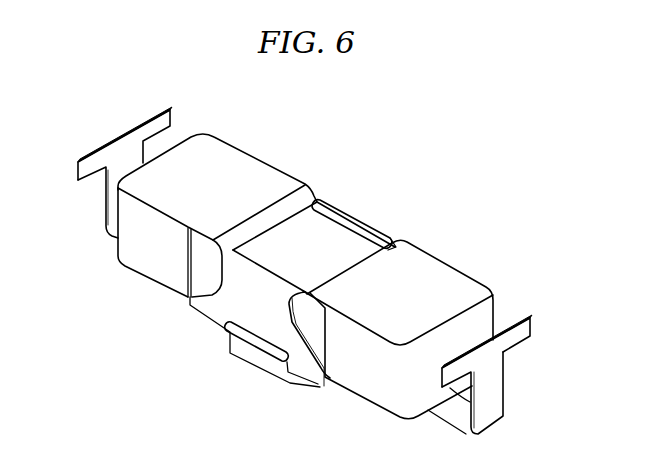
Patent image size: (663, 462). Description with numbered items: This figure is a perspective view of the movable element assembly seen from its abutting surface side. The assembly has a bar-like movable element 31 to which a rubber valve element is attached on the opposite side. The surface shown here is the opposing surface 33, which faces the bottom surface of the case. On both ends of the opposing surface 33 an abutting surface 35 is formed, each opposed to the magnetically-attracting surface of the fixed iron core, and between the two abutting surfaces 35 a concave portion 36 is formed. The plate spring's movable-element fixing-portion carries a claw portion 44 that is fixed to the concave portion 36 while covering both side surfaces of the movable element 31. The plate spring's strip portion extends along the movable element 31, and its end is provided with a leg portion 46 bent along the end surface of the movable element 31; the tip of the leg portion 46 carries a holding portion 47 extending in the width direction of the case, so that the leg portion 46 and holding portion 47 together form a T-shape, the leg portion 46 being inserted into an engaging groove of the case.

The movable element 31 is at (238, 188).
The opposing surface 33 is at (413, 283).
The abutting surface 35 is at (197, 160).
The concave portion 36 is at (331, 237).
The claw portion 44 is at (371, 238).
The leg portion 46 is at (123, 173).
The holding portion 47 is at (92, 168).